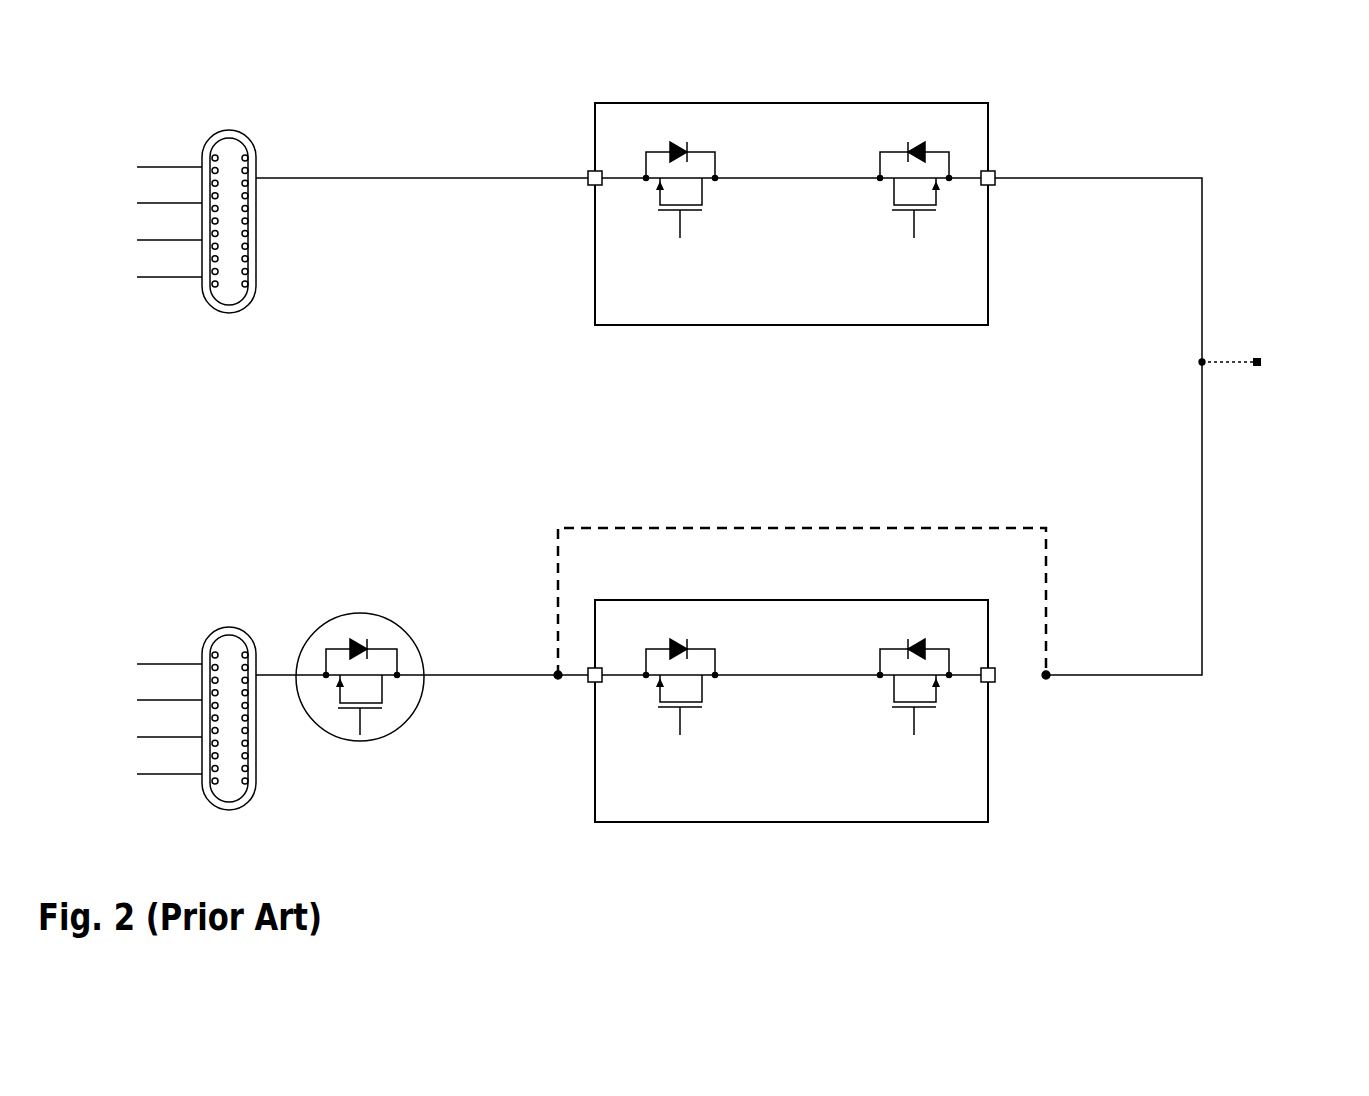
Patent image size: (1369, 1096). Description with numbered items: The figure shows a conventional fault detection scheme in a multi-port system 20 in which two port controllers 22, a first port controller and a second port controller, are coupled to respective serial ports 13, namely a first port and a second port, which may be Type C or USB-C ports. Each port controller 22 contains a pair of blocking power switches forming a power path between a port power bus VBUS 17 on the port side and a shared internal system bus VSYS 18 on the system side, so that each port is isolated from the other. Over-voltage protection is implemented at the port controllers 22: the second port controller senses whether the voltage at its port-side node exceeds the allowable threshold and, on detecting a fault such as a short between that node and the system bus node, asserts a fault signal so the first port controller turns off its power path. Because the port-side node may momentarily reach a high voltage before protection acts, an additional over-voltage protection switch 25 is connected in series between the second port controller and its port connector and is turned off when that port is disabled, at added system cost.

The multi-port system 20 is at (1210, 44).
The serial port 13 is at (246, 310).
The port power bus VBUS 17 is at (530, 178).
The port controller 22 is at (967, 103).
The internal system bus VSYS 18 is at (1160, 178).
The over-voltage protection switch 25 is at (378, 612).